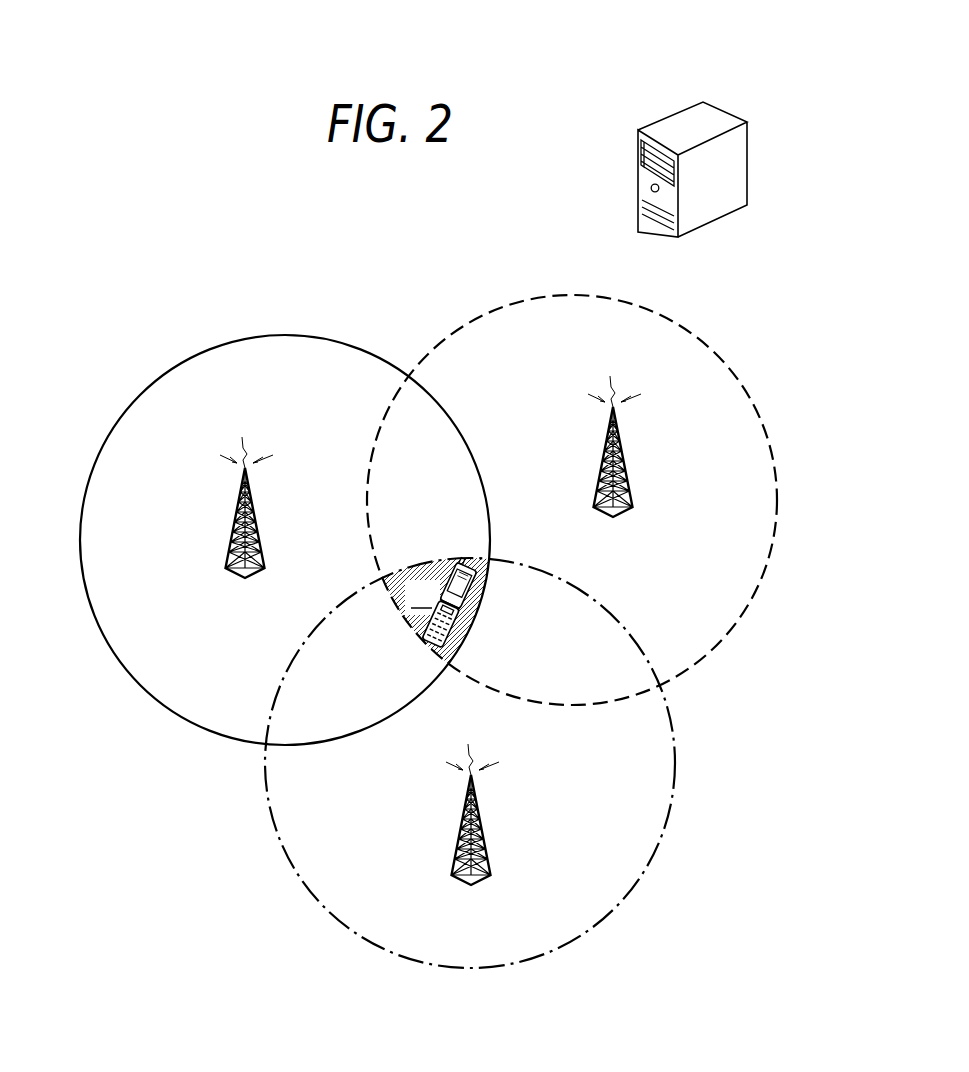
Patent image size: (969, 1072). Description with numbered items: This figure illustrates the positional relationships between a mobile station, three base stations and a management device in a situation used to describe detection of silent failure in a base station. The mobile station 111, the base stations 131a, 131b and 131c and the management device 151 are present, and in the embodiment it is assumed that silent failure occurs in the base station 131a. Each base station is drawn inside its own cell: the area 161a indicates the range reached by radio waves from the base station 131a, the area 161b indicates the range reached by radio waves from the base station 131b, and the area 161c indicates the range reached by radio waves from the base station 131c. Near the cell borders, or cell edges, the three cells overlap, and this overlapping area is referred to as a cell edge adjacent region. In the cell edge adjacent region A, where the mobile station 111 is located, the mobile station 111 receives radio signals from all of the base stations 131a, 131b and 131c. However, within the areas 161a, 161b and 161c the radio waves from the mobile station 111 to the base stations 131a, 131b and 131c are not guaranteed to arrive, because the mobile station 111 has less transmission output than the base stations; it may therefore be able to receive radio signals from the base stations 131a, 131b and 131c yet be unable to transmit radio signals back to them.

The management device 151 is at (672, 115).
The area 161a is at (197, 352).
The area 161b is at (692, 336).
The area 161c is at (470, 970).
The base station 131a is at (232, 536).
The base station 131b is at (628, 470).
The base station 131c is at (483, 837).
The mobile station 111 is at (463, 603).
The cell edge adjacent region A is at (410, 605).